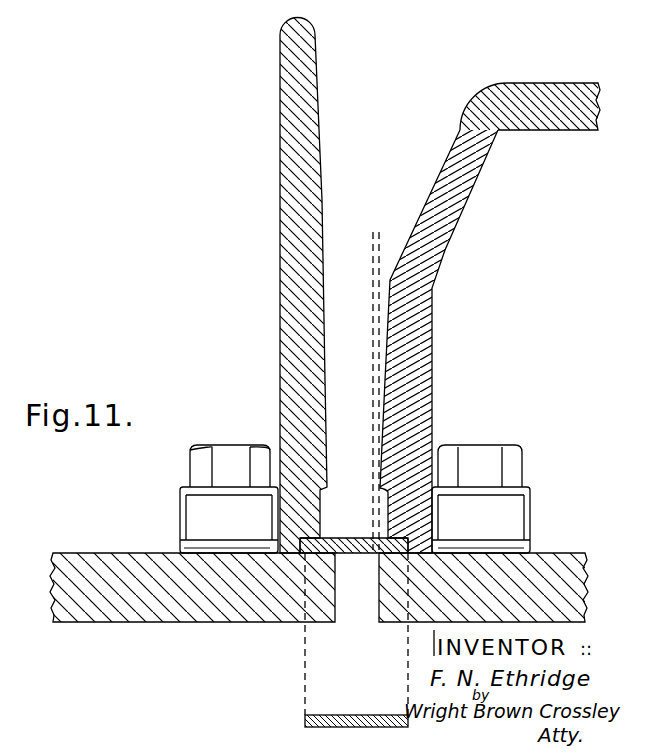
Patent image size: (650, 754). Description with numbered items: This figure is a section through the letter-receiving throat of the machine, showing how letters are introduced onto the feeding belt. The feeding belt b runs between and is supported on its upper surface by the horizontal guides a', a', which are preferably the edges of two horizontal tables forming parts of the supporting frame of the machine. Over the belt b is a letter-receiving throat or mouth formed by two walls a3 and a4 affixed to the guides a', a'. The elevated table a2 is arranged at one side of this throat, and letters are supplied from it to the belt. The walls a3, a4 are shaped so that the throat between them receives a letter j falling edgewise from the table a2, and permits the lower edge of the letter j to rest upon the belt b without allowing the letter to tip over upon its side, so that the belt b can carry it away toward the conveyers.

The horizontal guides a' is at (319, 603).
The elevated table a2 is at (550, 96).
The throat wall a3 is at (416, 317).
The throat wall a4 is at (285, 331).
The feeding belt b is at (353, 556).
The letter j is at (373, 243).